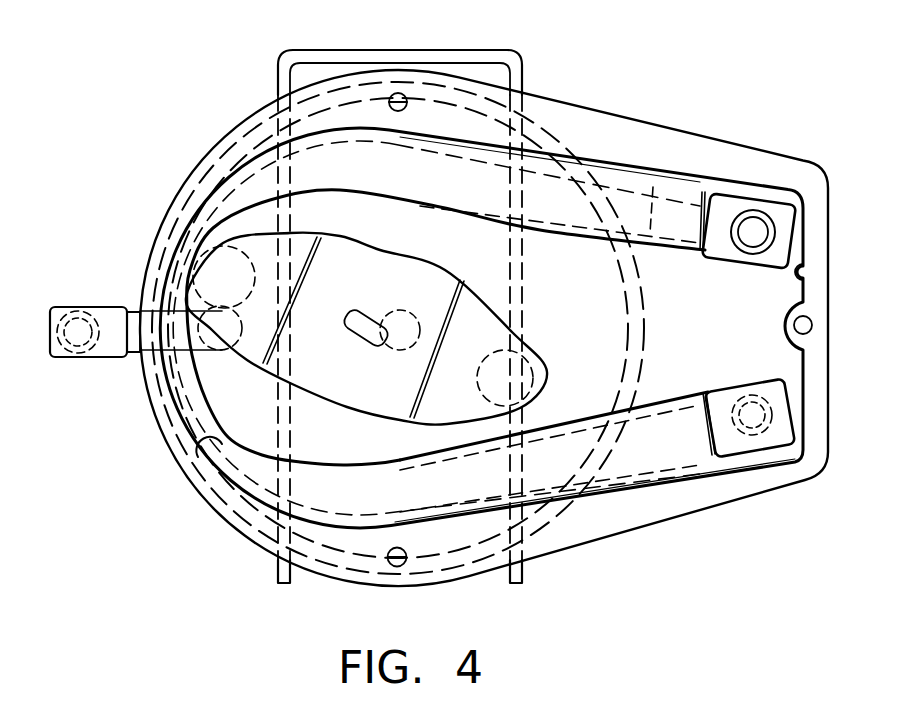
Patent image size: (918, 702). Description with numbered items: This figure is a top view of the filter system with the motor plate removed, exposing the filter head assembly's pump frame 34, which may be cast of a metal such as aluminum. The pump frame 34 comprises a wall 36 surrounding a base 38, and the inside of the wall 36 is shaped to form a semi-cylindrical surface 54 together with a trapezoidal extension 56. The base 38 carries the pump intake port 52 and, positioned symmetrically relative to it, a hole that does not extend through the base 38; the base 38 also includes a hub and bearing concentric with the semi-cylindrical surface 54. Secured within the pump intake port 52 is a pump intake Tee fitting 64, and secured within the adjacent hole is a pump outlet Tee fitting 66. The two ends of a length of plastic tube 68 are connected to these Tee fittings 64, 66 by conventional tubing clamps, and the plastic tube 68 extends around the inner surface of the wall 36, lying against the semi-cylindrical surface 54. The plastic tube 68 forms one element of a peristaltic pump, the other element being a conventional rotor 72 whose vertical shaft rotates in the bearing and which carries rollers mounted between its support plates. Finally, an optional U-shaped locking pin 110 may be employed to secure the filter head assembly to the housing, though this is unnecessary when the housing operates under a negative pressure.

The pump frame 34 is at (268, 553).
The wall 36 is at (622, 125).
The base 38 is at (463, 252).
The pump intake port 52 is at (770, 415).
The semi-cylindrical surface 54 is at (206, 472).
The trapezoidal extension 56 is at (808, 268).
The pump intake Tee fitting 64 is at (757, 448).
The pump outlet Tee fitting 66 is at (752, 192).
The plastic tube 68 is at (643, 467).
The rotor 72 is at (248, 362).
The U-shaped locking pin 110 is at (455, 50).